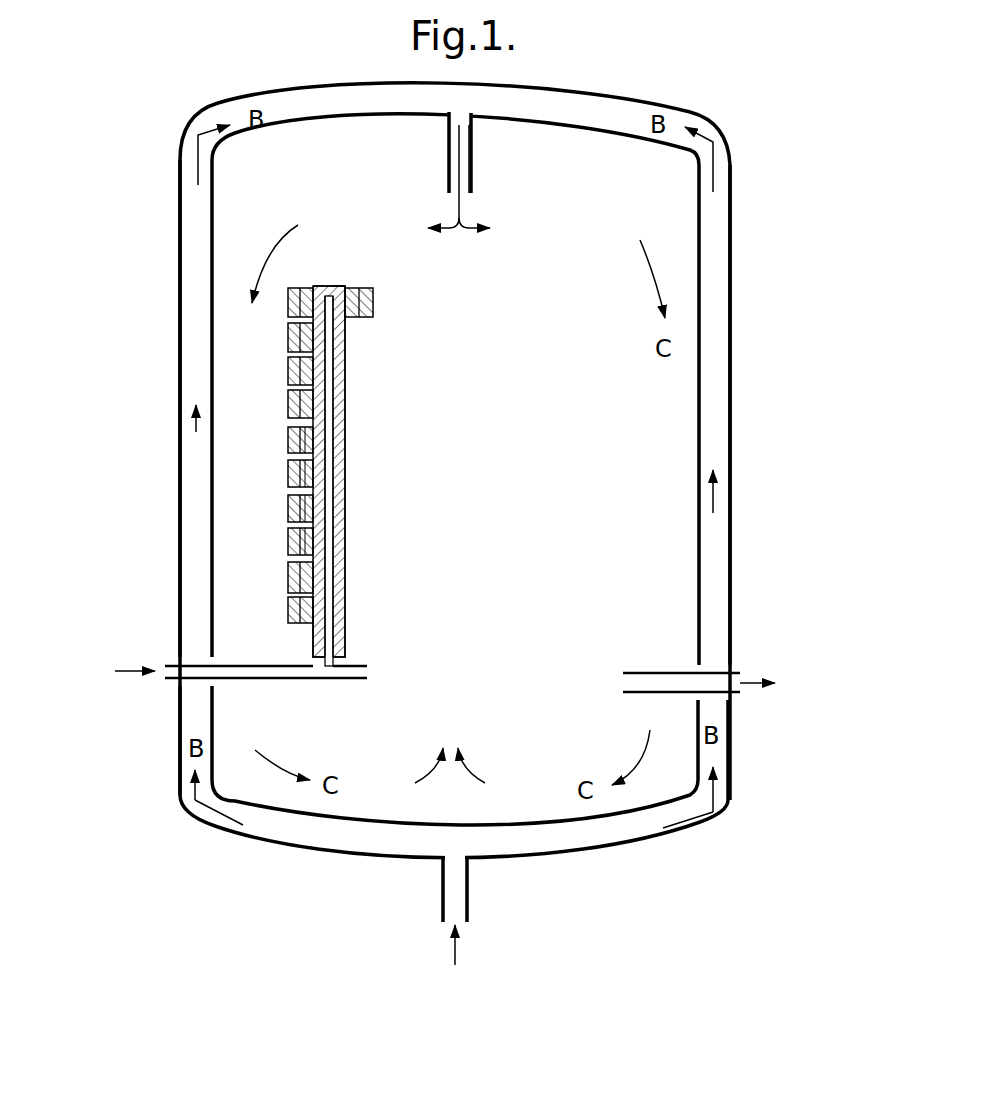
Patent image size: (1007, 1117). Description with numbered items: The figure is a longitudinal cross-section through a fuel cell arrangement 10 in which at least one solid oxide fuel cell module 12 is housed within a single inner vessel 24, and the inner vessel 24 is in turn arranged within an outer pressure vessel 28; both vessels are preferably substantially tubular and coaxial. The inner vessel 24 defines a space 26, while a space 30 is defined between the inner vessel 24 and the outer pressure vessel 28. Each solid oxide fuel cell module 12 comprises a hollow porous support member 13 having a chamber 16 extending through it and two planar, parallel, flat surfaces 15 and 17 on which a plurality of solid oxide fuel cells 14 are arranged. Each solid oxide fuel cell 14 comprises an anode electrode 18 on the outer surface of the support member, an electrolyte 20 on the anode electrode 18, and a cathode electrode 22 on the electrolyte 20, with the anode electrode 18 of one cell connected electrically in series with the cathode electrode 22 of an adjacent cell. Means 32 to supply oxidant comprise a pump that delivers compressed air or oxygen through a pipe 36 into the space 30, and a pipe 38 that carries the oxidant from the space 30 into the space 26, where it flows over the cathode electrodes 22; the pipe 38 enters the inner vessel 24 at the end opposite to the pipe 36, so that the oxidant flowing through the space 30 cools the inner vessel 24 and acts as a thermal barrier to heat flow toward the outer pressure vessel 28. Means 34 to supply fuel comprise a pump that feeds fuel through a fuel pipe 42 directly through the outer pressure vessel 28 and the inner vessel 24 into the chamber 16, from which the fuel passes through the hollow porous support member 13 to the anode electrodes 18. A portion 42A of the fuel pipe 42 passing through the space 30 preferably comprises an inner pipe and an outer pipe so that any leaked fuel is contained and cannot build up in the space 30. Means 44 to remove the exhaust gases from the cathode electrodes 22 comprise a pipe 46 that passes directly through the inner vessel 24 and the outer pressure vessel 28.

The fuel cell arrangement 10 is at (860, 415).
The solid oxide fuel cell module 12 is at (340, 583).
The hollow porous support member 13 is at (325, 286).
The solid oxide fuel cells 14 is at (390, 299).
The planar flat surface 15 is at (313, 638).
The chamber 16 is at (327, 548).
The planar flat surface 17 is at (340, 625).
The anode electrode 18 is at (308, 470).
The electrolyte 20 is at (292, 338).
The cathode electrode 22 is at (288, 540).
The inner vessel 24 is at (700, 245).
The space 26 is at (677, 752).
The outer pressure vessel 28 is at (729, 360).
The space 30 is at (713, 562).
The means to supply oxidant 32 is at (456, 950).
The means to supply fuel 34 is at (134, 668).
The pipe 36 is at (467, 890).
The pipe 38 is at (449, 158).
The fuel pipe 42 is at (173, 682).
The portion of the fuel pipe 42A is at (200, 657).
The means to remove the exhaust gases 44 is at (750, 682).
The pipe 46 is at (730, 696).